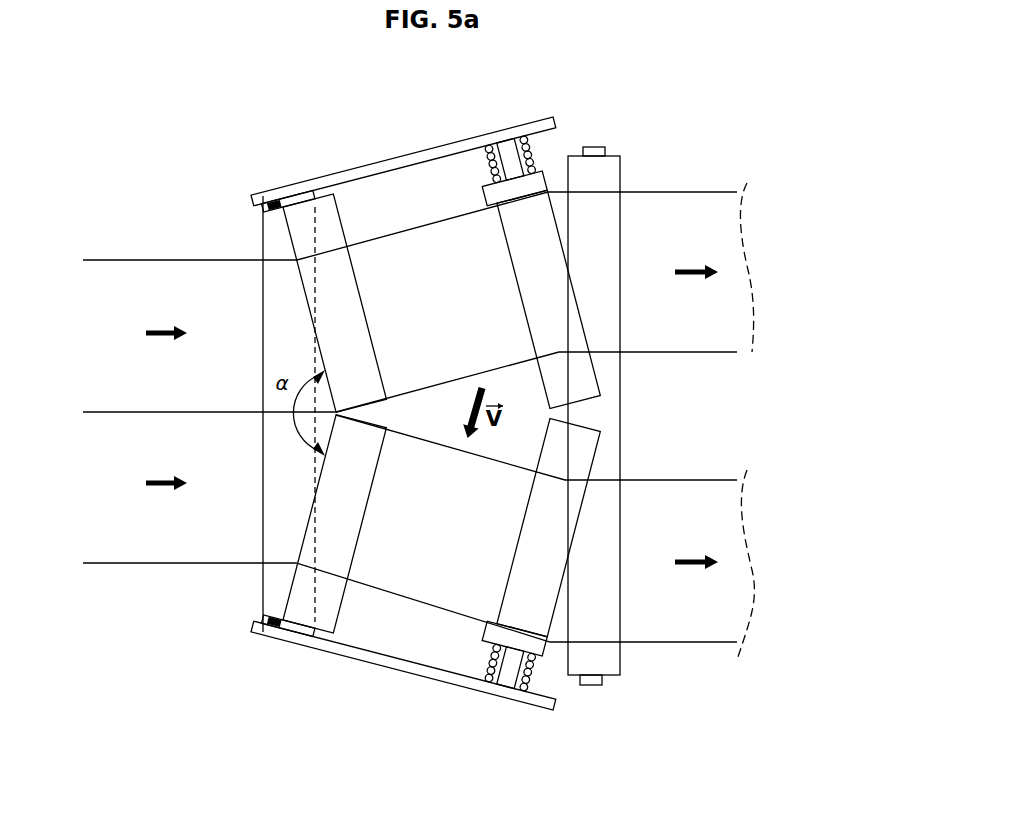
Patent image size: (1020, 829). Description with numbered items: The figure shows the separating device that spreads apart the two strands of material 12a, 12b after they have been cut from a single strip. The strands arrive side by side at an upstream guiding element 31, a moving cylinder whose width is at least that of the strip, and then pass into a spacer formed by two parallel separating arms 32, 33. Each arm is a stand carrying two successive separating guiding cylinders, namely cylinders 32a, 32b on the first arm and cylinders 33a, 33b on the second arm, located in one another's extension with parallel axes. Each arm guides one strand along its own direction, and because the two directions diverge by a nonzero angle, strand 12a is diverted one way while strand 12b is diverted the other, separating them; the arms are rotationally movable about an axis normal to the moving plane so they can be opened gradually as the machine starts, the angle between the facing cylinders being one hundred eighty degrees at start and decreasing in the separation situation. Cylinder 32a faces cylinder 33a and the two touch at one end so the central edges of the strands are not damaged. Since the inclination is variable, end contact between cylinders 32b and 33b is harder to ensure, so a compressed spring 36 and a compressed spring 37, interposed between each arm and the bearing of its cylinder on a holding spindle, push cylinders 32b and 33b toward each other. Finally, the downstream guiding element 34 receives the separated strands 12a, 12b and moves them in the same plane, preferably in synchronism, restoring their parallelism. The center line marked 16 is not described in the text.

The strand of material 12a is at (162, 288).
The strand of material 12b is at (162, 530).
The center plane line 16 is at (243, 412).
The upstream guiding element 31 is at (264, 576).
The separating arm 32 is at (440, 95).
The separating guiding cylinder 32a is at (327, 235).
The separating guiding cylinder 32b is at (505, 200).
The separating arm 33 is at (440, 715).
The separating guiding cylinder 33a is at (327, 595).
The separating guiding cylinder 33b is at (505, 632).
The downstream guiding element 34 is at (607, 658).
The compressed spring 36 is at (545, 155).
The compressed spring 37 is at (546, 678).